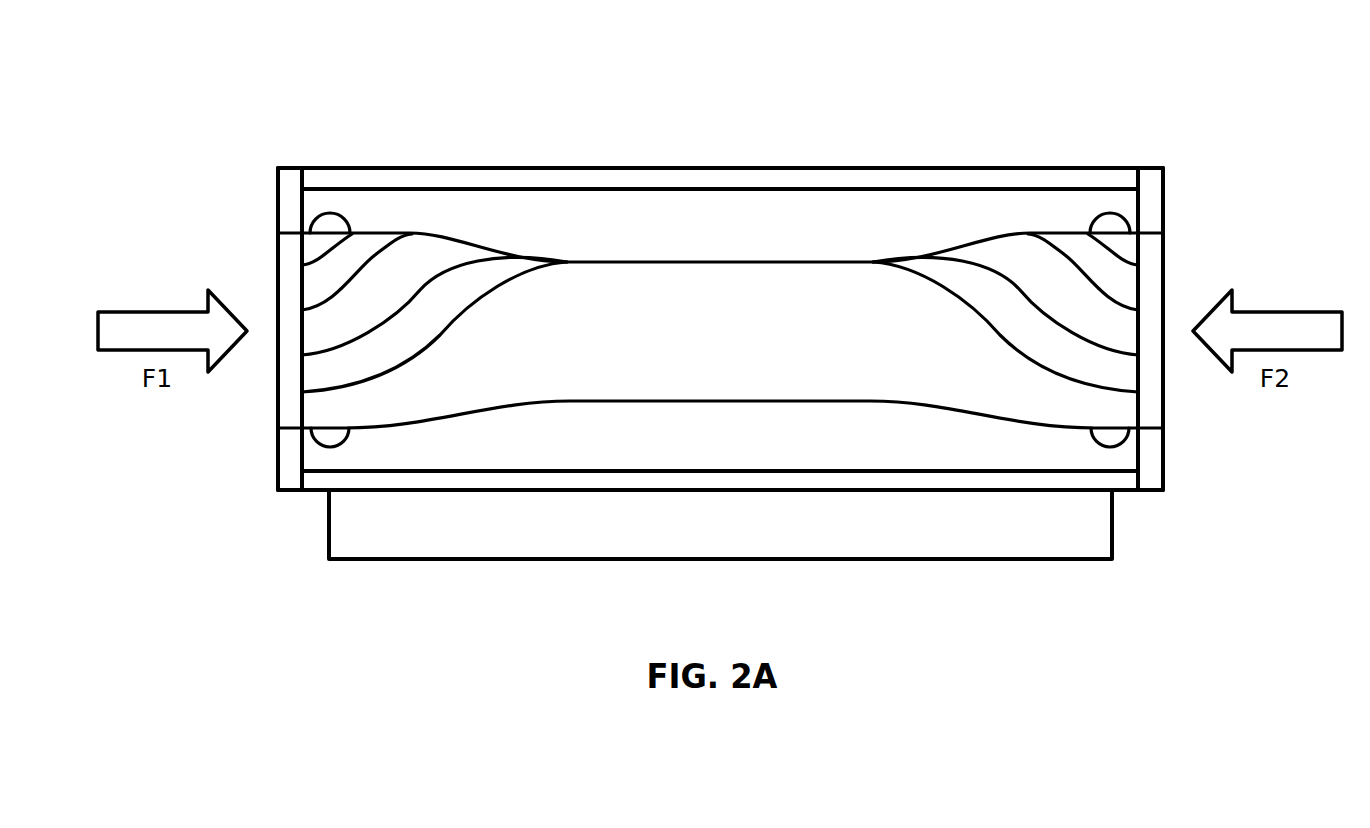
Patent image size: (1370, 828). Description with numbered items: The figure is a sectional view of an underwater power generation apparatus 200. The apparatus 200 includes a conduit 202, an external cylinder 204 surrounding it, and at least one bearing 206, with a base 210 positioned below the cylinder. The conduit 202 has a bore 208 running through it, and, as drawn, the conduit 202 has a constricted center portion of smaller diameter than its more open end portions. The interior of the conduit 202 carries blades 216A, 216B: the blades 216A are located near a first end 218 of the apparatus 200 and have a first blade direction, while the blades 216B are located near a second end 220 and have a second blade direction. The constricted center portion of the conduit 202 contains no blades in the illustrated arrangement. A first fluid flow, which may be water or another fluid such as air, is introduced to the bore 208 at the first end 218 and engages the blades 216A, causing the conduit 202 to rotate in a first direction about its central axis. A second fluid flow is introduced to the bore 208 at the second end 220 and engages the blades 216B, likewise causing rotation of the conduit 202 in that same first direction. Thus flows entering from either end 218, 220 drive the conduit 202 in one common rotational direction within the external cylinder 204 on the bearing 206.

The underwater power generation apparatus 200 is at (478, 98).
The conduit 202 is at (672, 262).
The external cylinder 204 is at (897, 177).
The bearing 206 is at (323, 433).
The bore 208 is at (328, 283).
The base 210 is at (342, 533).
The blades 216A is at (503, 280).
The blades 216B is at (975, 300).
The first end 218 is at (247, 168).
The second end 220 is at (1210, 172).